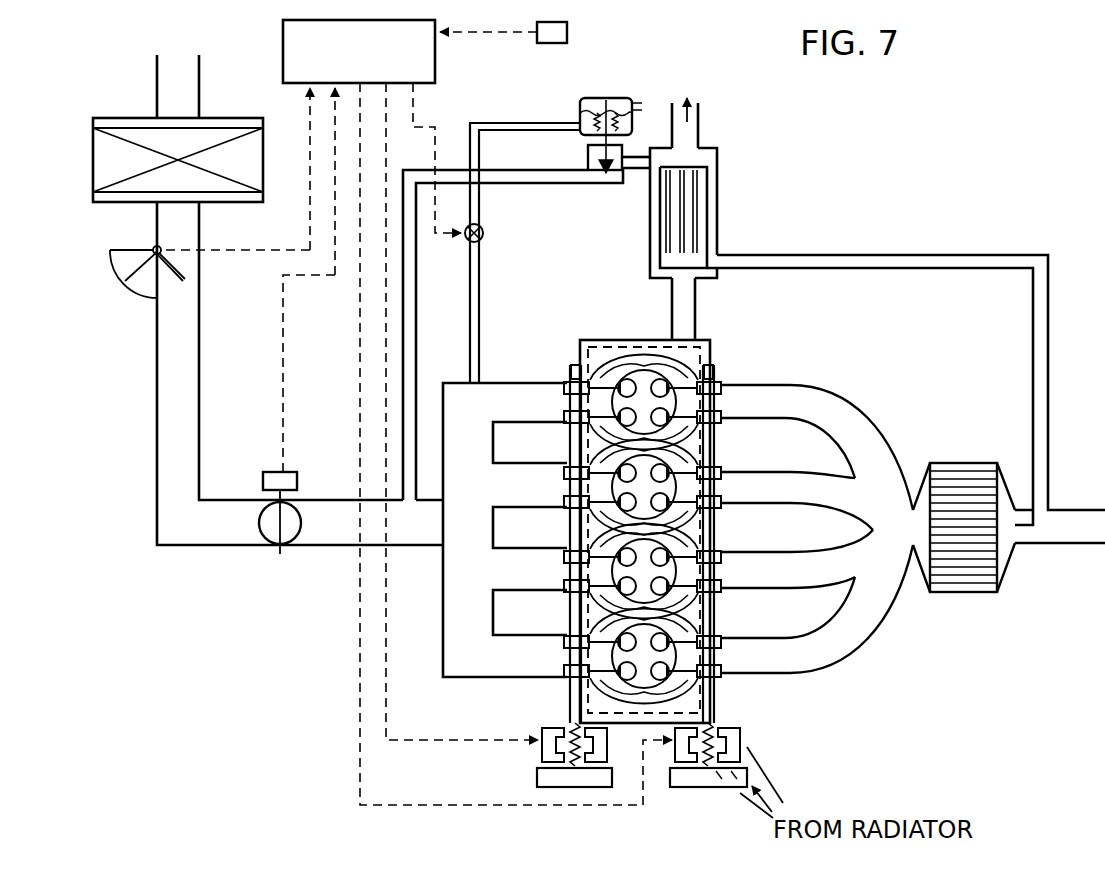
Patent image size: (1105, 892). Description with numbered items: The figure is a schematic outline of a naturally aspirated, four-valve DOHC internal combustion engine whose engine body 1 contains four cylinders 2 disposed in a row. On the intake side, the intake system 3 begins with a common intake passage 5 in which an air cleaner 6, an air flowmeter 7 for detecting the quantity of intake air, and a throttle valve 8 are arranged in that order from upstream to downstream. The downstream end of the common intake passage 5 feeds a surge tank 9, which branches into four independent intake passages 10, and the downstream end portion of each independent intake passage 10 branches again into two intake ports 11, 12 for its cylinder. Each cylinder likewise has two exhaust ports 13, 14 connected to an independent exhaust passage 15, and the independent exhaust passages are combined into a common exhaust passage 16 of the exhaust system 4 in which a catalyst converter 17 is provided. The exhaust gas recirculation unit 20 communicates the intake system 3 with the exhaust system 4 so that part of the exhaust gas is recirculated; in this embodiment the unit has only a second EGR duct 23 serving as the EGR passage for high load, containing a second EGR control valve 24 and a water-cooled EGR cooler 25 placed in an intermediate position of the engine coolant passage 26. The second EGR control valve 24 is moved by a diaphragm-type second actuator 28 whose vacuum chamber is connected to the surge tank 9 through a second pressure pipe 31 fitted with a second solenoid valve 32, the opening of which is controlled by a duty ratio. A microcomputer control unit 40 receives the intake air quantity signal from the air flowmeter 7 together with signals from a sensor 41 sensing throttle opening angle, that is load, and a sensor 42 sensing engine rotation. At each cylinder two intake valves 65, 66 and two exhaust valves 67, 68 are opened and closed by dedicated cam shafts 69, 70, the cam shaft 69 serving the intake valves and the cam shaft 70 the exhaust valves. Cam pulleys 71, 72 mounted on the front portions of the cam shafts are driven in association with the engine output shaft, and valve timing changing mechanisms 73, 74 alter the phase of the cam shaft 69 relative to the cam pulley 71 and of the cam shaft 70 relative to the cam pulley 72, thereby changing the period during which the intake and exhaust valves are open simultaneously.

The engine body 1 is at (618, 338).
The cylinder 2 is at (648, 346).
The intake system 3 is at (340, 624).
The exhaust system 4 is at (858, 658).
The common intake passage 5 is at (186, 405).
The air cleaner 6 is at (93, 146).
The air flowmeter 7 is at (110, 272).
The throttle valve 8 is at (296, 540).
The surge tank 9 is at (476, 545).
The independent intake passage 10 is at (535, 415).
The intake port 11 is at (616, 351).
The intake port 12 is at (585, 397).
The exhaust port 13 is at (738, 351).
The exhaust port 14 is at (746, 390).
The independent exhaust passage 15 is at (823, 423).
The common exhaust passage 16 is at (1091, 540).
The catalyst converter 17 is at (964, 592).
The exhaust gas recirculation unit 20 is at (783, 238).
The second EGR duct 23 is at (930, 254).
The second EGR control valve 24 is at (588, 160).
The EGR cooler 25 is at (717, 210).
The coolant passage 26 is at (698, 118).
The second actuator 28 is at (590, 98).
The second pressure pipe 31 is at (482, 123).
The second solenoid valve 32 is at (483, 229).
The control unit 40 is at (283, 46).
The sensor 41 is at (297, 474).
The sensor 42 is at (545, 43).
The intake valve 65 is at (569, 478).
The intake valve 66 is at (570, 538).
The exhaust valve 67 is at (738, 478).
The exhaust valve 68 is at (746, 541).
The cam shaft 69 is at (568, 688).
The cam shaft 70 is at (722, 688).
The cam pulley 71 is at (552, 785).
The cam pulley 72 is at (710, 785).
The valve timing changing mechanism 73 is at (530, 758).
The valve timing changing mechanism 74 is at (752, 748).